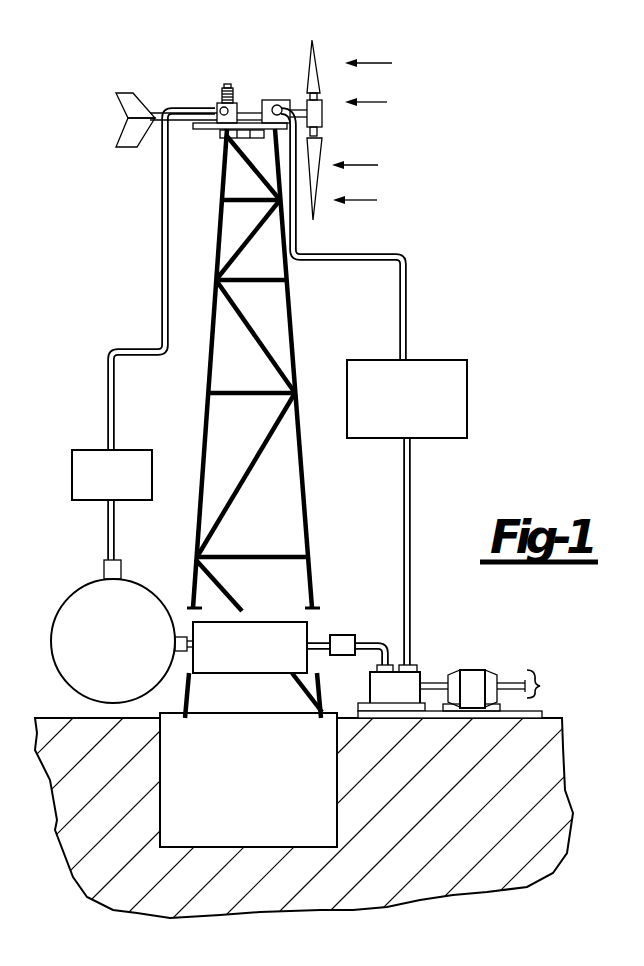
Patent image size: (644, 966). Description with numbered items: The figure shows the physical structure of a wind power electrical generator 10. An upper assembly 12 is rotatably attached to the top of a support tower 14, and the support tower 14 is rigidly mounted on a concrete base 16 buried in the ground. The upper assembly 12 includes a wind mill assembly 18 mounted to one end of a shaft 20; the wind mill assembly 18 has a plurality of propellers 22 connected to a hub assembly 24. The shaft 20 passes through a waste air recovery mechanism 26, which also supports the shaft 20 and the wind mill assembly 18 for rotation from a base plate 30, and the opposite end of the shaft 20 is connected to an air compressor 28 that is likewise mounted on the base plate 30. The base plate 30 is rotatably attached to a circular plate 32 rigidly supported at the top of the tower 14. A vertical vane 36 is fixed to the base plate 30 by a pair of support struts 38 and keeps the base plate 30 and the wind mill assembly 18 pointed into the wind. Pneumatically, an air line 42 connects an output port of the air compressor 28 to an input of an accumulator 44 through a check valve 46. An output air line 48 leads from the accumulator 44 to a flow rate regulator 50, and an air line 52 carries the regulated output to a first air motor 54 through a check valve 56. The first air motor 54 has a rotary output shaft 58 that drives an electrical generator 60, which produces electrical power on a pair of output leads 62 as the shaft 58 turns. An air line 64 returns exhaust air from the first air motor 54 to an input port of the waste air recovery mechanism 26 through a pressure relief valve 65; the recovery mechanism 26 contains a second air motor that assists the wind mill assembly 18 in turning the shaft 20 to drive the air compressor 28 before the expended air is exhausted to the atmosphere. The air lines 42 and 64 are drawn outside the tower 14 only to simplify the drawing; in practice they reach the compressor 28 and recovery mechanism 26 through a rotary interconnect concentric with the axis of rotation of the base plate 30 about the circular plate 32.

The wind power electrical generator 10 is at (264, 423).
The upper assembly 12 is at (228, 111).
The support tower 14 is at (208, 410).
The concrete base 16 is at (266, 794).
The wind mill assembly 18 is at (322, 118).
The shaft 20 is at (251, 106).
The propellers 22 is at (318, 180).
The hub assembly 24 is at (322, 107).
The waste air recovery mechanism 26 is at (289, 98).
The air compressor 28 is at (216, 100).
The base plate 30 is at (198, 129).
The circular plate 32 is at (225, 139).
The vertical vane 36 is at (123, 92).
The support struts 38 is at (154, 124).
The air line 42 is at (163, 290).
The accumulator 44 is at (65, 613).
The check valve 46 is at (72, 465).
The output air line 48 is at (186, 636).
The flow rate regulator 50 is at (243, 675).
The air line 52 is at (310, 630).
The first air motor 54 is at (368, 702).
The check valve 56 is at (353, 638).
The rotary output shaft 58 is at (430, 682).
The electrical generator 60 is at (470, 675).
The output leads 62 is at (535, 684).
The air line 64 is at (412, 480).
The pressure relief valve 65 is at (467, 386).